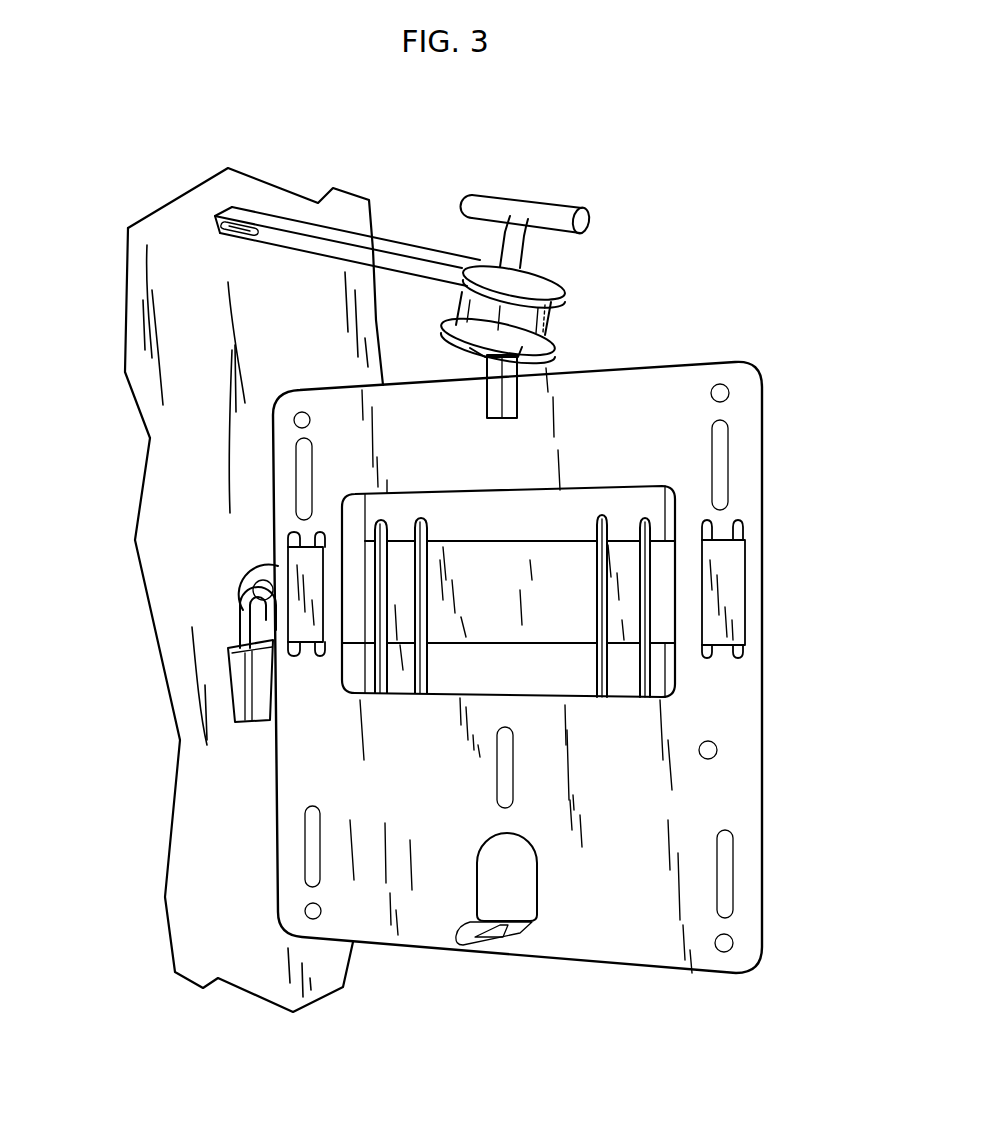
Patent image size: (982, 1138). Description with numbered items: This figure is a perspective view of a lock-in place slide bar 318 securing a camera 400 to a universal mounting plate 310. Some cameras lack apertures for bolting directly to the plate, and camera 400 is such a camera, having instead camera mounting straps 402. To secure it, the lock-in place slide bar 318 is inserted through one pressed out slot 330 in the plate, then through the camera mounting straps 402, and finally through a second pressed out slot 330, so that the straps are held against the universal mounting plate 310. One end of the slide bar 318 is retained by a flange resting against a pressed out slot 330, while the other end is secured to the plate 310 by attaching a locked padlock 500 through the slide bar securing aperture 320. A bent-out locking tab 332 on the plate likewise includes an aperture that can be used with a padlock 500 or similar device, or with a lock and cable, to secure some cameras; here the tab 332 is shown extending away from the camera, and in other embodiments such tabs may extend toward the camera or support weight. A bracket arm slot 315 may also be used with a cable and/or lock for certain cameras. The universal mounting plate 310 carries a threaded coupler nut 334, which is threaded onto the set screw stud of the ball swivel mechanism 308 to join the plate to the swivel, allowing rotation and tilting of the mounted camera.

The ball swivel mechanism 308 is at (503, 302).
The universal mounting plate 310 is at (430, 857).
The bracket arm slot 315 is at (243, 223).
The lock-in place slide bar 318 is at (509, 585).
The slide bar securing aperture 320 is at (253, 588).
The pressed out slot 330 is at (300, 530).
The bent-out locking tab 332 is at (487, 947).
The threaded coupler nut 334 is at (503, 397).
The camera 400 is at (487, 663).
The camera mounting straps 402 is at (412, 607).
The padlock 500 is at (263, 685).